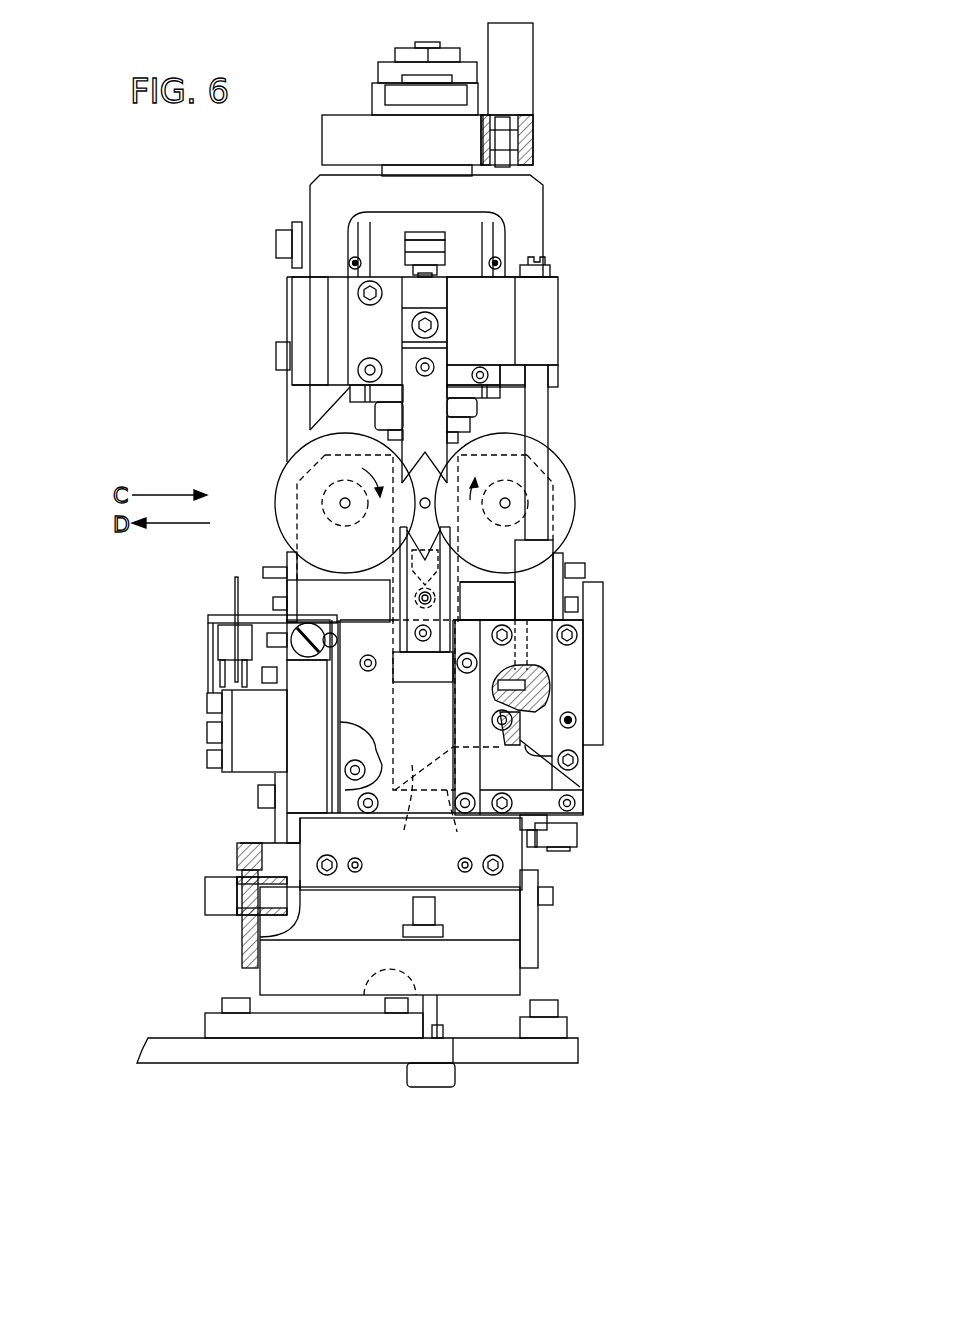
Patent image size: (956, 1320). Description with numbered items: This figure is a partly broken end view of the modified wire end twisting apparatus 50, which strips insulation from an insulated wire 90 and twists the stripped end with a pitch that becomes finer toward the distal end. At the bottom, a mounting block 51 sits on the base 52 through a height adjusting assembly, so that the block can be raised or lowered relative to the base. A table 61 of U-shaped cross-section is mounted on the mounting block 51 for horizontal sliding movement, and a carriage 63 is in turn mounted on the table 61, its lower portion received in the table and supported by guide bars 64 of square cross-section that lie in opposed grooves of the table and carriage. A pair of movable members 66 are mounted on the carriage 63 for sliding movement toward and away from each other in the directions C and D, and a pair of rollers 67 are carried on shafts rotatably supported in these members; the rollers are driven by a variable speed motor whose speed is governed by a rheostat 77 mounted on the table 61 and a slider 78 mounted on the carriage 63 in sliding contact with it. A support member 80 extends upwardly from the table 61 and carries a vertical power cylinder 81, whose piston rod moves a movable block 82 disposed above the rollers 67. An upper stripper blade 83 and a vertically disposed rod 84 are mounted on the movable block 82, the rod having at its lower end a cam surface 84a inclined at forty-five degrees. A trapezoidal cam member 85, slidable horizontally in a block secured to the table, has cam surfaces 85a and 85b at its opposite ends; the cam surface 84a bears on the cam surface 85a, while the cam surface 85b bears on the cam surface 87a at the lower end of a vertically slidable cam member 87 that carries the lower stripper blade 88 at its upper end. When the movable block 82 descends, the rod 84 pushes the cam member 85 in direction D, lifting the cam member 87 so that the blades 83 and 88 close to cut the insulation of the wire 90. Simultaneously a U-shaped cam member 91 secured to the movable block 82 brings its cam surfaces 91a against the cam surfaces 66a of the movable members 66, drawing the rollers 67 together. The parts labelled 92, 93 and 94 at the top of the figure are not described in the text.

The wire end twisting apparatus 50 is at (568, 63).
The mounting block 51 is at (515, 918).
The base 52 is at (320, 1050).
The table 61 is at (298, 755).
The carriage 63 is at (300, 590).
The guide bars 64 is at (320, 652).
The movable members 66 is at (313, 527).
The cam surfaces of movable members 66a is at (297, 483).
The rollers 67 is at (292, 467).
The variable resistor or rheostat 77 is at (232, 640).
The slider 78 is at (218, 655).
The support member 80 is at (285, 408).
The power cylinder 81 is at (462, 423).
The movable block 82 is at (505, 312).
The upper stripper blade 83 is at (440, 402).
The rod 84 is at (548, 540).
The cam surface of rod 84a is at (523, 755).
The trapezoidal cam member 85 is at (493, 752).
The cam surface of cam member 85a is at (578, 781).
The cam surface of cam member 85b is at (417, 814).
The cam member 87 is at (405, 710).
The cam surface of cam member 87a is at (447, 800).
The lower stripper blade 88 is at (413, 590).
The insulated wire 90 is at (430, 508).
The U-shaped cam member 91 is at (320, 187).
The cam surfaces of U-shaped cam member 91a is at (605, 348).
The stop bolt 92 is at (432, 236).
The lock nut 93 is at (415, 50).
The guide rod 94 is at (528, 92).